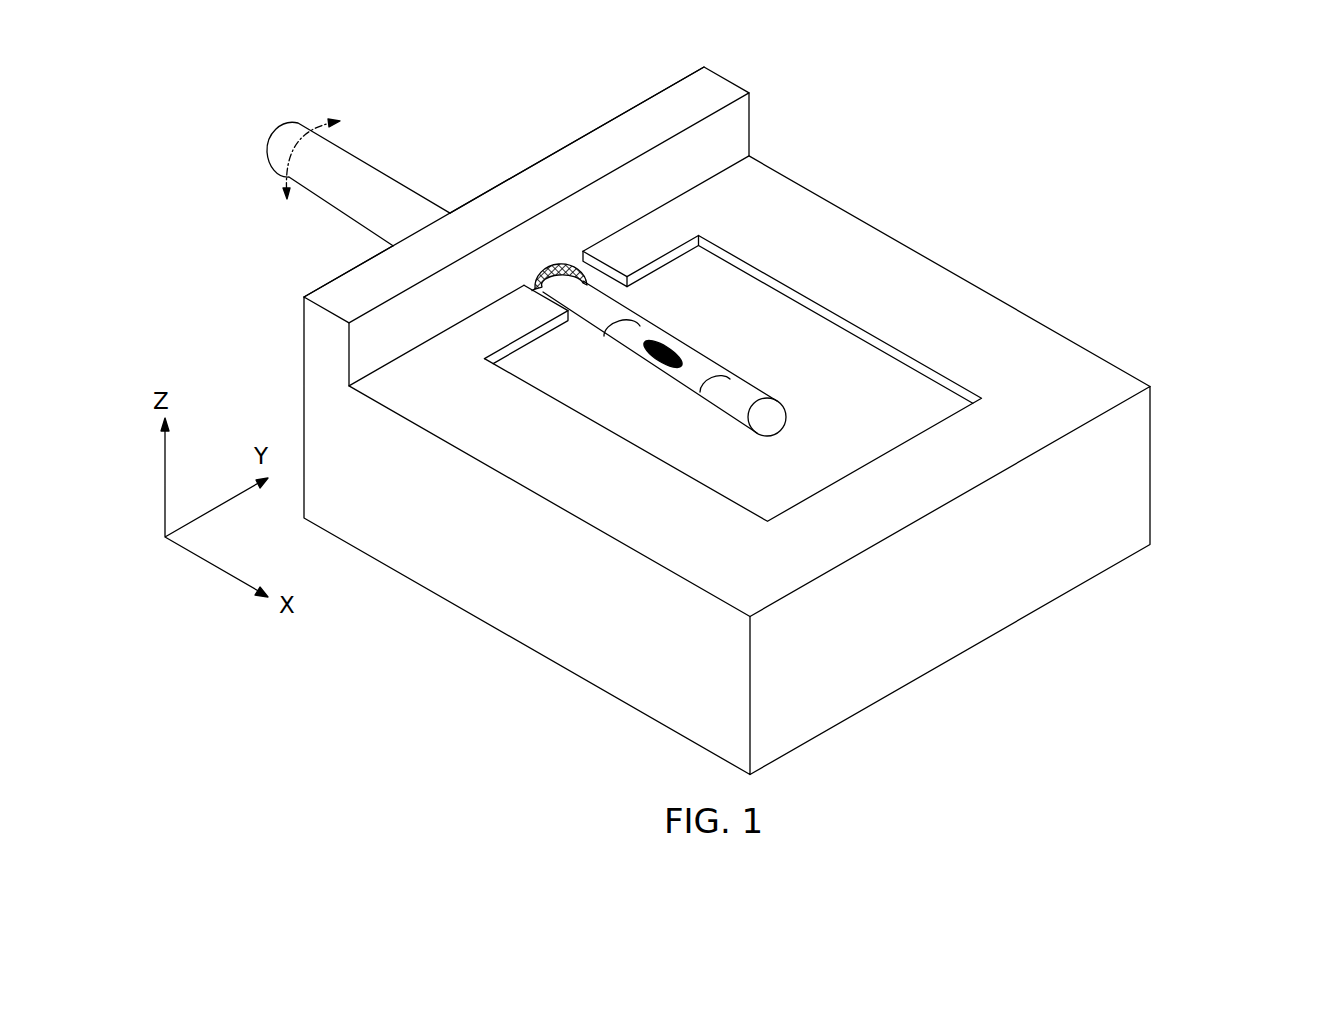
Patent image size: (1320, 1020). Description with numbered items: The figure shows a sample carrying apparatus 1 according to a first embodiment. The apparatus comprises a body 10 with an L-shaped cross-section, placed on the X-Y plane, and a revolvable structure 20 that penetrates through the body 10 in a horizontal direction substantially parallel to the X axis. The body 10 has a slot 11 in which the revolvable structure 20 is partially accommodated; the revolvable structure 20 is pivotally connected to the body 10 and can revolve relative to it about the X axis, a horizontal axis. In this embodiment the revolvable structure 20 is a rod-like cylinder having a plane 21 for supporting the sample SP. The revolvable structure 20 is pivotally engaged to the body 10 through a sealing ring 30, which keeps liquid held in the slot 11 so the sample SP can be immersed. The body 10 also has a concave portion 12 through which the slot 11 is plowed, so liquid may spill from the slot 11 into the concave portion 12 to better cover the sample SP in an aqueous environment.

The sample carrying apparatus 1 is at (989, 167).
The body 10 is at (1135, 490).
The slot 11 is at (808, 404).
The concave portion 12 is at (822, 343).
The revolvable structure 20 is at (384, 188).
The plane 21 is at (698, 375).
The sealing ring 30 is at (568, 268).
The sample SP is at (658, 362).